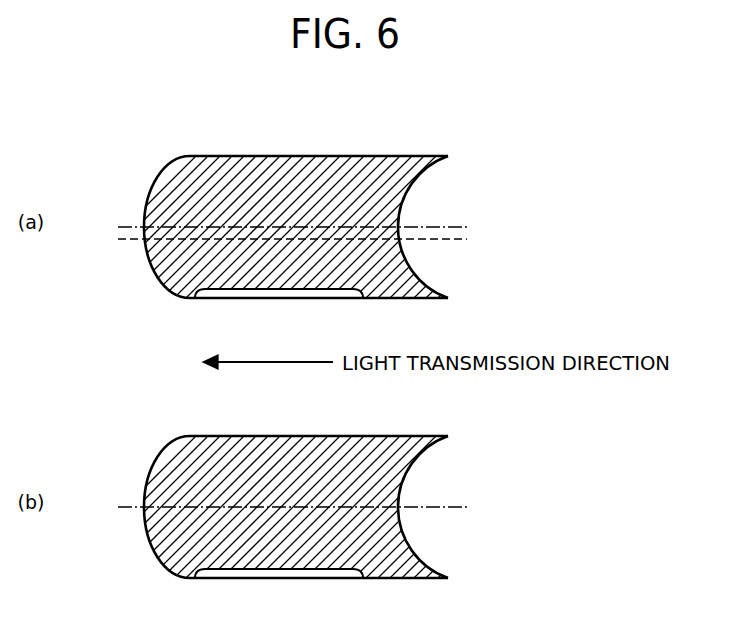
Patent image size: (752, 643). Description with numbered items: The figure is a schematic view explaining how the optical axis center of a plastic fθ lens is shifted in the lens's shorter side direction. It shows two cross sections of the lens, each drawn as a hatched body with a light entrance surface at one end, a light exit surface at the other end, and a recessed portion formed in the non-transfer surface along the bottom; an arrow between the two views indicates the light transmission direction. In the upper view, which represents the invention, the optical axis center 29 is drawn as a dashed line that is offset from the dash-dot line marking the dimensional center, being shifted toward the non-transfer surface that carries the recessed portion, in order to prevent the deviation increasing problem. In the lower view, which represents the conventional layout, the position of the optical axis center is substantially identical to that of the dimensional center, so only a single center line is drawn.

The optical axis center 29 is at (122, 237).